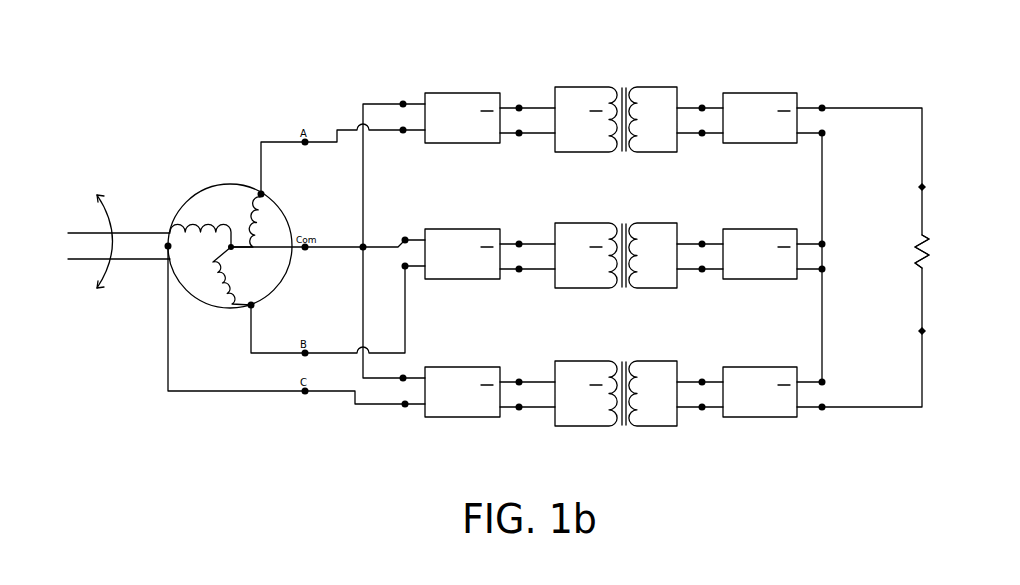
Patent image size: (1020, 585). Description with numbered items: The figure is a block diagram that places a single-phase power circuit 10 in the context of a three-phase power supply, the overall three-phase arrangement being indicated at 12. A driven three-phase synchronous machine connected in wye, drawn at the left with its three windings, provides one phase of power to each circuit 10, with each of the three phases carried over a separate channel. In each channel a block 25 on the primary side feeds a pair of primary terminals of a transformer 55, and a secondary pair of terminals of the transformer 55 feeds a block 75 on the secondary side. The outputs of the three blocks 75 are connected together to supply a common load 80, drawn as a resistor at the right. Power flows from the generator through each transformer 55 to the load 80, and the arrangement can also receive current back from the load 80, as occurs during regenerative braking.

The circuit 10 is at (573, 72).
The power conversion system 12 is at (731, 24).
The rectifier circuit 25 is at (462, 255).
The transformer 55 is at (616, 256).
The output converter circuit 75 is at (760, 255).
The load 80 is at (911, 251).